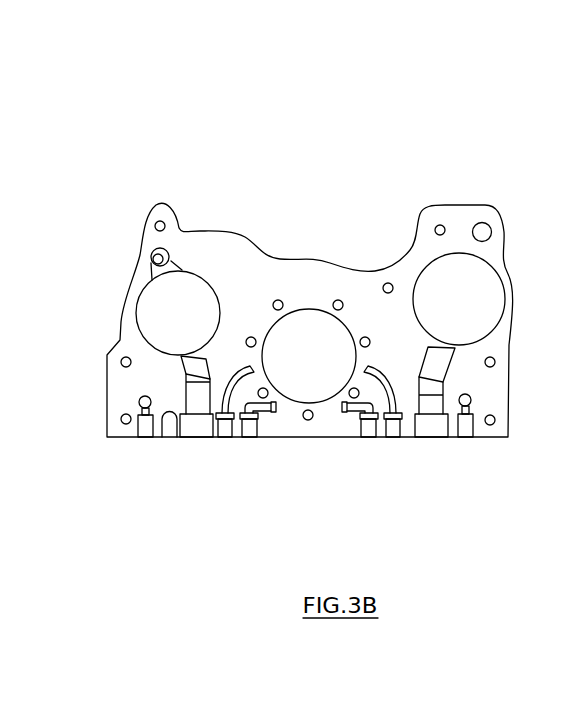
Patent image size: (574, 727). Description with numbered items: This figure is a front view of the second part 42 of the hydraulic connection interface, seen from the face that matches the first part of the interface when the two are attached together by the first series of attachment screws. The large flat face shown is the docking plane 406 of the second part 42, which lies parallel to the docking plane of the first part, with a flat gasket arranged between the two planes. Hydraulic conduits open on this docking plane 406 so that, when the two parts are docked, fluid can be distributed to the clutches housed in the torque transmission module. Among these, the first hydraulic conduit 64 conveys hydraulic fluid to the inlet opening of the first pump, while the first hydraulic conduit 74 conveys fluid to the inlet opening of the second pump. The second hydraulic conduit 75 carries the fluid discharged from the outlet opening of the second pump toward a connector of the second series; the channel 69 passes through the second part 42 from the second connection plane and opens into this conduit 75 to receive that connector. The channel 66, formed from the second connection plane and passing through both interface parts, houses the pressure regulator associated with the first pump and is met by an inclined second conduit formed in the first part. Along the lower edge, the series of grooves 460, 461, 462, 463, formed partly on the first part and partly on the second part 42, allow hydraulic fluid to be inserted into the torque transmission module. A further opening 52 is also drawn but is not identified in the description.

The second part of the hydraulic connection interface 42 is at (112, 265).
The hole 52 is at (155, 221).
The channel 69 is at (155, 254).
The second hydraulic conduit 75 is at (166, 248).
The docking plane 406 is at (320, 282).
The channel 66 is at (484, 229).
The first hydraulic conduit 74 is at (196, 424).
The groove 463 is at (226, 425).
The groove 462 is at (249, 425).
The groove 461 is at (367, 425).
The groove 460 is at (396, 424).
The first hydraulic conduit 64 is at (434, 424).